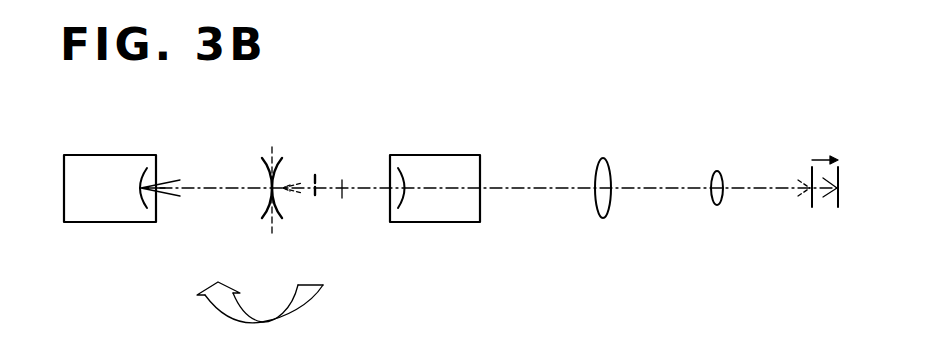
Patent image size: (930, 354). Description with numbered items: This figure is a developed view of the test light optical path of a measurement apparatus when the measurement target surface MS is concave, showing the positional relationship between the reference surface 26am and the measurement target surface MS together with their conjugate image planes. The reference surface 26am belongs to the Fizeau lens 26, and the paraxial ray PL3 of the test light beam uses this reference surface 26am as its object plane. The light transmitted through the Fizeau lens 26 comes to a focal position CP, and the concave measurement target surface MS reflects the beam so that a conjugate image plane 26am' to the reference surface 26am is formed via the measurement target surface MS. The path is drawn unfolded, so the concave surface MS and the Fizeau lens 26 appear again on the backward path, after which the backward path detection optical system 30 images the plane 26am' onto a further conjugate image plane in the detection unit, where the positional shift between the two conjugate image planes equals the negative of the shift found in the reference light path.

The Fizeau lens 26 is at (58, 162).
The reference surface 26am is at (123, 163).
The paraxial ray of the test light beam PL3 is at (173, 180).
The measurement target surface MS is at (265, 160).
The conjugate image plane to the reference surface 26am' is at (355, 226).
The focal position CP is at (342, 198).
The backward path detection optical system 30 is at (725, 230).